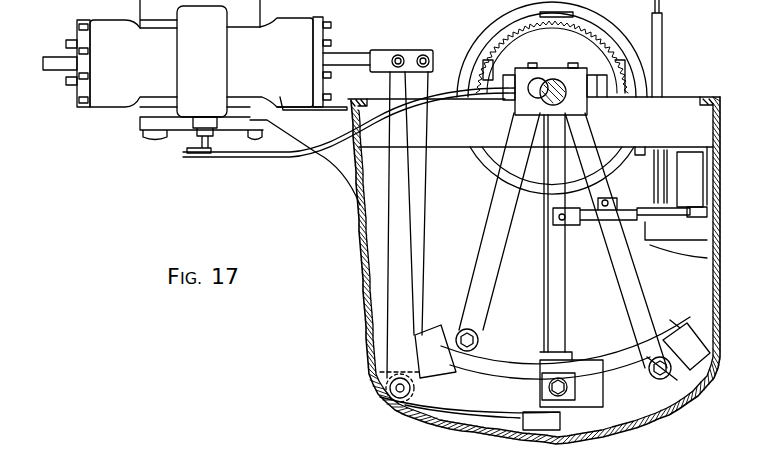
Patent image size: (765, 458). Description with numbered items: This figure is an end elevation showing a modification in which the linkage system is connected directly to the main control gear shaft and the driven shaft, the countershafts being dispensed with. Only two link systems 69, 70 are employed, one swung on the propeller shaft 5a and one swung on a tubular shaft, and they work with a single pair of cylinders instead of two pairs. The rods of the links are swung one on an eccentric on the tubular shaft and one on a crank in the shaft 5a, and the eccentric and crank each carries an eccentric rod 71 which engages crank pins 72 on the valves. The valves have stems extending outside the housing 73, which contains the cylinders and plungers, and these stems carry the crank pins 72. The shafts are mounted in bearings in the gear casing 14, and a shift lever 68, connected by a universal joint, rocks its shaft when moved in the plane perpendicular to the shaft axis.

The gear casing 14 is at (363, 287).
The housing 73 is at (238, 70).
The crank pins 72 is at (200, 156).
The eccentric rod 71 is at (298, 156).
The propeller shaft 5a is at (567, 59).
The shift lever 68 is at (662, 51).
The link system 70 is at (497, 358).
The link system 69 is at (620, 367).